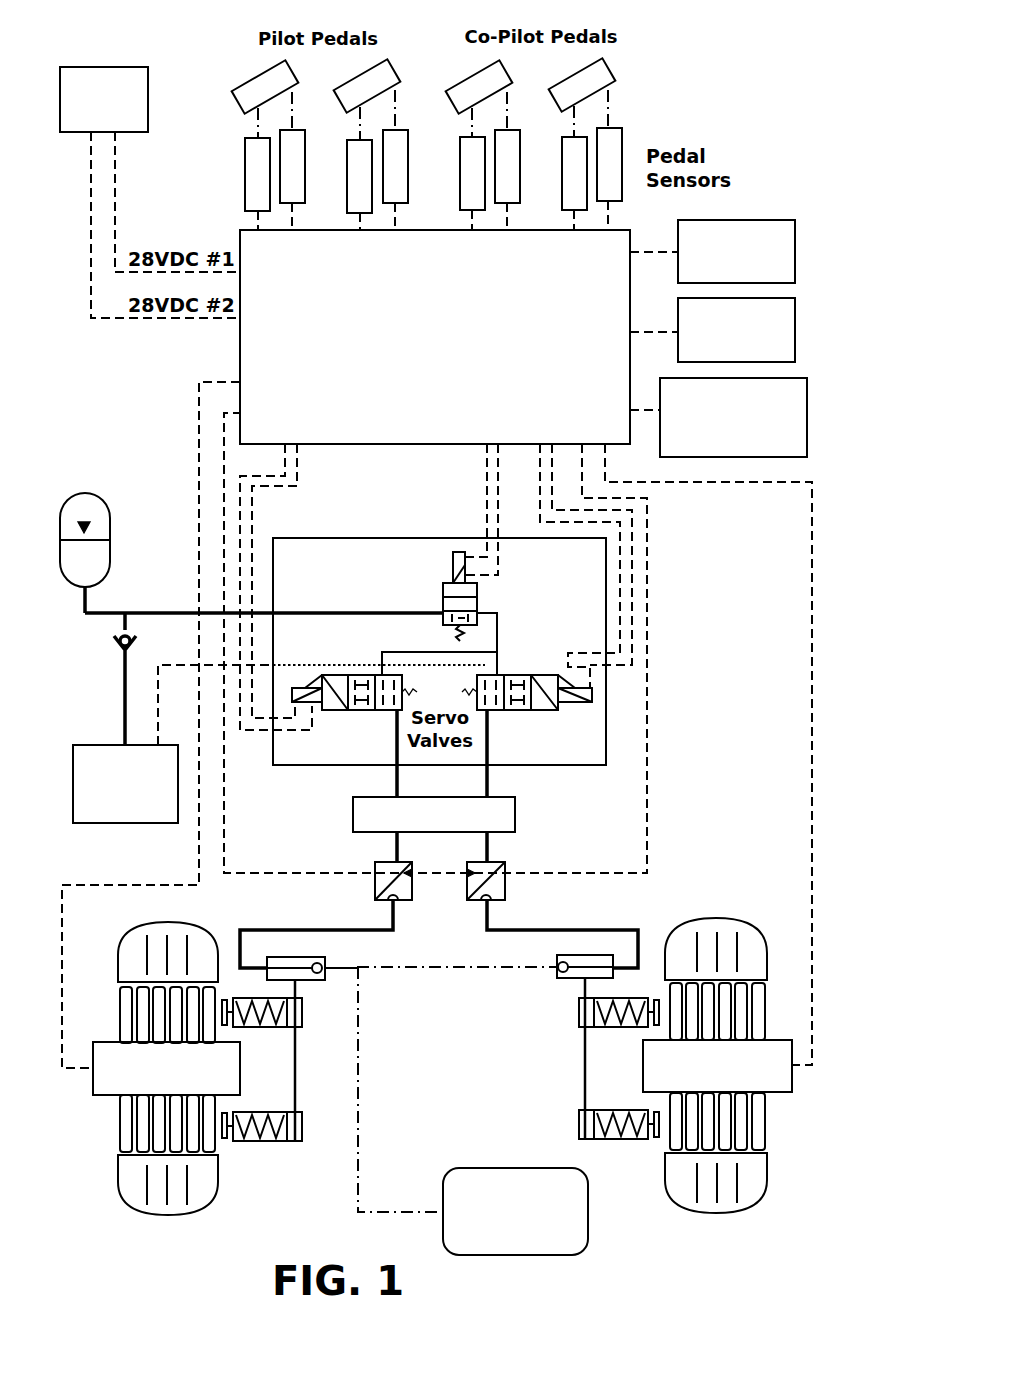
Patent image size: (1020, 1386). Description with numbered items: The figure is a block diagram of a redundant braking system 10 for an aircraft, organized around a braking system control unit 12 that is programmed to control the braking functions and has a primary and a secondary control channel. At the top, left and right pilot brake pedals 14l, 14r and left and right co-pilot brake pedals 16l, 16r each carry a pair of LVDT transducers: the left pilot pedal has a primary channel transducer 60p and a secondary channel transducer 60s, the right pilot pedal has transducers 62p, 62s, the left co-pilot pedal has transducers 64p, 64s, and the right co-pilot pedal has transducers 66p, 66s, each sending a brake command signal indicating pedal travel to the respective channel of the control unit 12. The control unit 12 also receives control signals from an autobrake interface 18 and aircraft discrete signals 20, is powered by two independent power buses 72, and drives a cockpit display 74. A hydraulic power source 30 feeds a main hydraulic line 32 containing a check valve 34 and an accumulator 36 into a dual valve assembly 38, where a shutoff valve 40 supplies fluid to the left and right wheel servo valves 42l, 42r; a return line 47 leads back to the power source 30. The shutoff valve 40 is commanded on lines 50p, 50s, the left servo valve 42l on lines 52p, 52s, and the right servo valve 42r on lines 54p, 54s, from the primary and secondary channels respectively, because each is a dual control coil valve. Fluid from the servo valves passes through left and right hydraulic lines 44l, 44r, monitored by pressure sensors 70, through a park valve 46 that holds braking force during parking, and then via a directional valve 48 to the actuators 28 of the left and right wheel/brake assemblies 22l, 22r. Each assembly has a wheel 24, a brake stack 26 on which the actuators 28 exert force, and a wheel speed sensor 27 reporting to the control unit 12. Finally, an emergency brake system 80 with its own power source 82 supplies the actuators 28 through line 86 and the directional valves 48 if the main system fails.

The redundant braking system 10 is at (45, 66).
The braking system control unit 12 is at (630, 239).
The left pilot brake pedal 14l is at (242, 78).
The right pilot brake pedal 14r is at (396, 62).
The left co-pilot brake pedal 16l is at (450, 96).
The right co-pilot brake pedal 16r is at (615, 63).
The autobrake interface 18 is at (752, 220).
The aircraft discrete control signals 20 is at (678, 312).
The left wheel/brake assembly 22l is at (98, 1212).
The right wheel/brake assembly 22r is at (783, 1156).
The wheel 24 is at (140, 925).
The brake stack 26 is at (118, 1018).
The wheel speed sensor 27 is at (93, 1088).
The actuators 28 is at (302, 1013).
The hydraulic power source 30 is at (125, 823).
The main hydraulic line 32 is at (162, 613).
The check valve 34 is at (115, 642).
The accumulator 36 is at (105, 490).
The dual valve assembly 38 is at (548, 766).
The shutoff valve 40 is at (478, 597).
The left wheel servo valve 42l is at (362, 712).
The right wheel servo valve 42r is at (518, 712).
The left hydraulic line 44l is at (395, 790).
The right hydraulic line 44r is at (490, 790).
The park valve 46 is at (353, 825).
The return line 47 is at (180, 667).
The directional valve 48 is at (330, 958).
The primary shutoff valve control line 50p is at (484, 466).
The secondary shutoff valve control line 50s is at (495, 493).
The primary left servo valve control line 52p is at (298, 466).
The secondary left servo valve control line 52s is at (255, 492).
The primary right servo valve control line 54p is at (618, 549).
The secondary right servo valve control line 54s is at (630, 580).
The primary channel transducer 60p is at (245, 160).
The secondary channel transducer 60s is at (305, 178).
The primary channel transducer 62p is at (347, 158).
The secondary channel transducer 62s is at (408, 176).
The primary channel transducer 64p is at (460, 168).
The secondary channel transducer 64s is at (520, 176).
The primary channel transducer 66p is at (562, 165).
The secondary channel transducer 66s is at (622, 160).
The pressure sensors 70 is at (375, 893).
The power buses 72 is at (94, 67).
The cockpit display 74 is at (660, 388).
The emergency brake system 80 is at (462, 1141).
The emergency brake power source 82 is at (446, 1172).
The emergency brake line 86 is at (355, 1212).